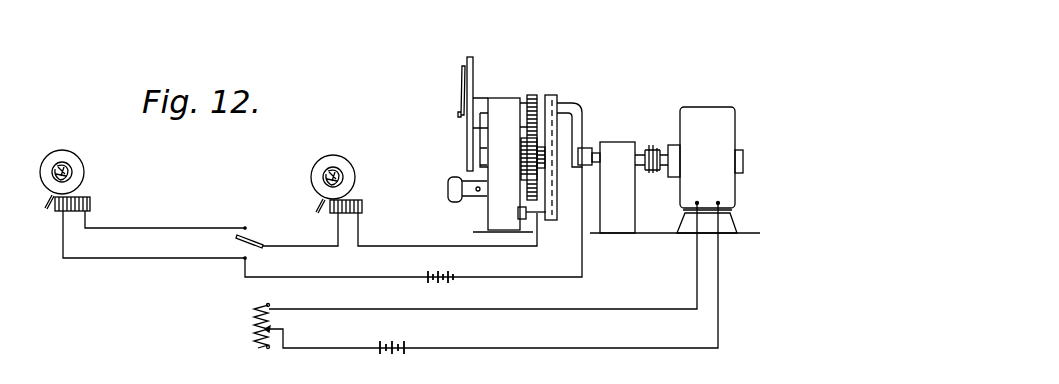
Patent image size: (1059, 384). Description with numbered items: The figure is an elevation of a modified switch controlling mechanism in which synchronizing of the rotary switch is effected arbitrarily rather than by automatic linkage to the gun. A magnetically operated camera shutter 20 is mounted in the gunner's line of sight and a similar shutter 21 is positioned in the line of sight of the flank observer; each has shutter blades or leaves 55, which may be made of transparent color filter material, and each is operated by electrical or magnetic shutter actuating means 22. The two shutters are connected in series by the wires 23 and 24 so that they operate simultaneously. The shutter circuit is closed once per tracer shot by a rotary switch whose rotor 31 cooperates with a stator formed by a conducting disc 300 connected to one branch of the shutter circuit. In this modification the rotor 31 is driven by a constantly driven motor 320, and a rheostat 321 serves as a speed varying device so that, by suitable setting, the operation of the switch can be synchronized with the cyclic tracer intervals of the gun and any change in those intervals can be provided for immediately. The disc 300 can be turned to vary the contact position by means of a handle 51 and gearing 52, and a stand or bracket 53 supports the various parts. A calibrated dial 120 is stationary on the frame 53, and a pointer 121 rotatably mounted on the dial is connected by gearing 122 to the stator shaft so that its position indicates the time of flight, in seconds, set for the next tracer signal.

The camera shutter 20 is at (84, 176).
The shutter 21 is at (355, 174).
The shutter actuating means 22 is at (90, 201).
The wire 23 is at (189, 228).
The wire 24 is at (177, 257).
The rotor 31 is at (580, 110).
The handle 51 is at (449, 181).
The gearing 52 is at (525, 152).
The stand or bracket 53 is at (500, 98).
The shutter blades or leaves 55 is at (70, 167).
The dial 120 is at (474, 56).
The pointer 121 is at (461, 78).
The gearing 122 is at (533, 95).
The disc 300 is at (553, 95).
The motor 320 is at (699, 108).
The rheostat 321 is at (250, 321).